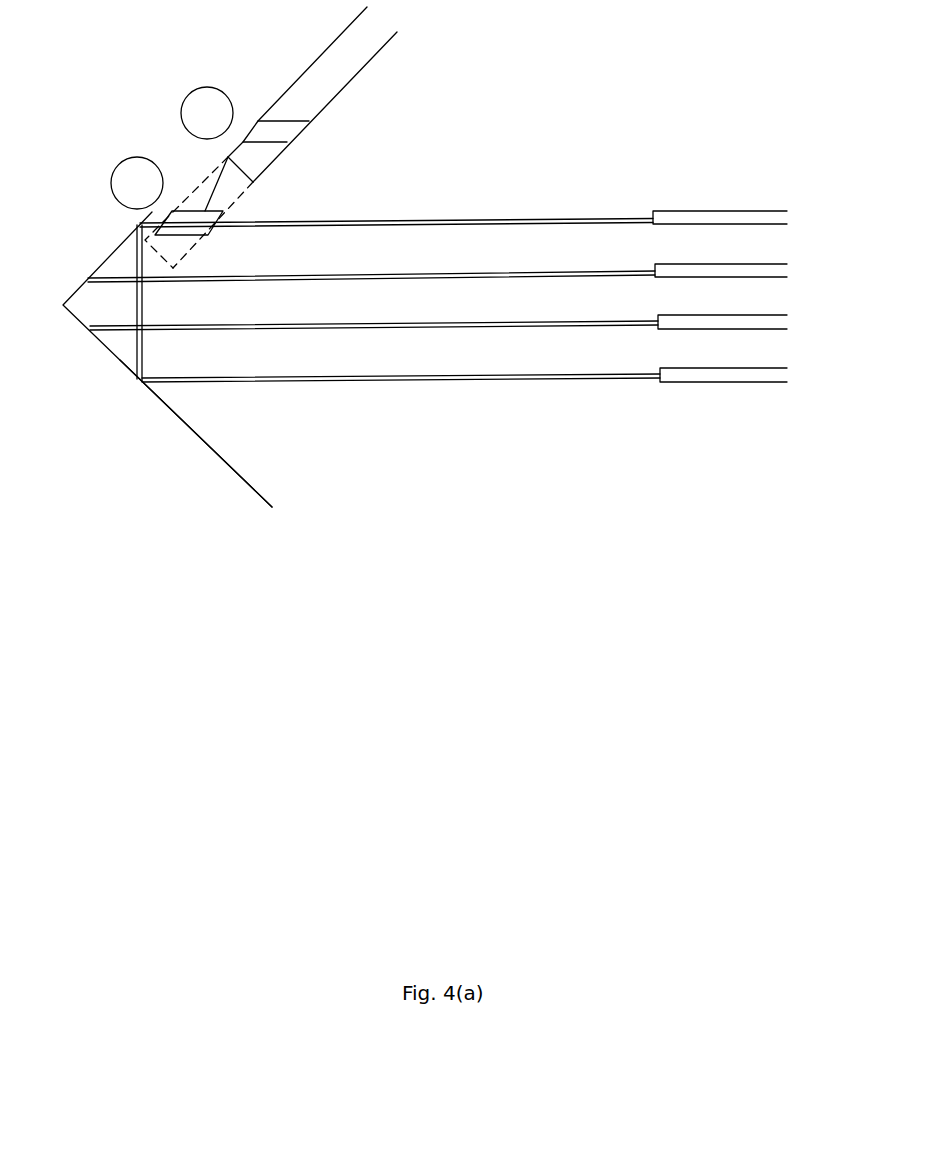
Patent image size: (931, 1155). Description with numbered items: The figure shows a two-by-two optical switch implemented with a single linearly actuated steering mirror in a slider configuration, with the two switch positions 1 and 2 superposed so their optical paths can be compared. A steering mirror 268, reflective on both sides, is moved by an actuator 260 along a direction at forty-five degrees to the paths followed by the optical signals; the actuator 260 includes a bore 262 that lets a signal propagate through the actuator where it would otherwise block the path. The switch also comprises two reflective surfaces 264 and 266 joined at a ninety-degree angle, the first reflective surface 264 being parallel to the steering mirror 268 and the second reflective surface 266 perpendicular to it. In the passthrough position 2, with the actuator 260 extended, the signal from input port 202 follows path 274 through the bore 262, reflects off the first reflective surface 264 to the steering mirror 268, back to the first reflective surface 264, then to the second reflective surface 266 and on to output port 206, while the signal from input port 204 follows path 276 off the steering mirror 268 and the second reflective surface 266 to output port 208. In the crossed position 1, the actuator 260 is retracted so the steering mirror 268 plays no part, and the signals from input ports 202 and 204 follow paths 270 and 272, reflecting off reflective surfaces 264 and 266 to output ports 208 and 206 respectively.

The input port 202 is at (491, 217).
The input port 204 is at (492, 271).
The output port 206 is at (469, 326).
The output port 208 is at (495, 376).
The actuator 260 is at (283, 137).
The bore 262 is at (210, 218).
The first reflective surface 264 is at (156, 355).
The second reflective surface 266 is at (196, 433).
The steering mirror 268 is at (125, 292).
The path 270 is at (508, 219).
The path 272 is at (507, 272).
The path 274 is at (625, 223).
The path 276 is at (625, 277).
The crossed switch position 1 is at (207, 113).
The passthrough switch position 2 is at (137, 183).